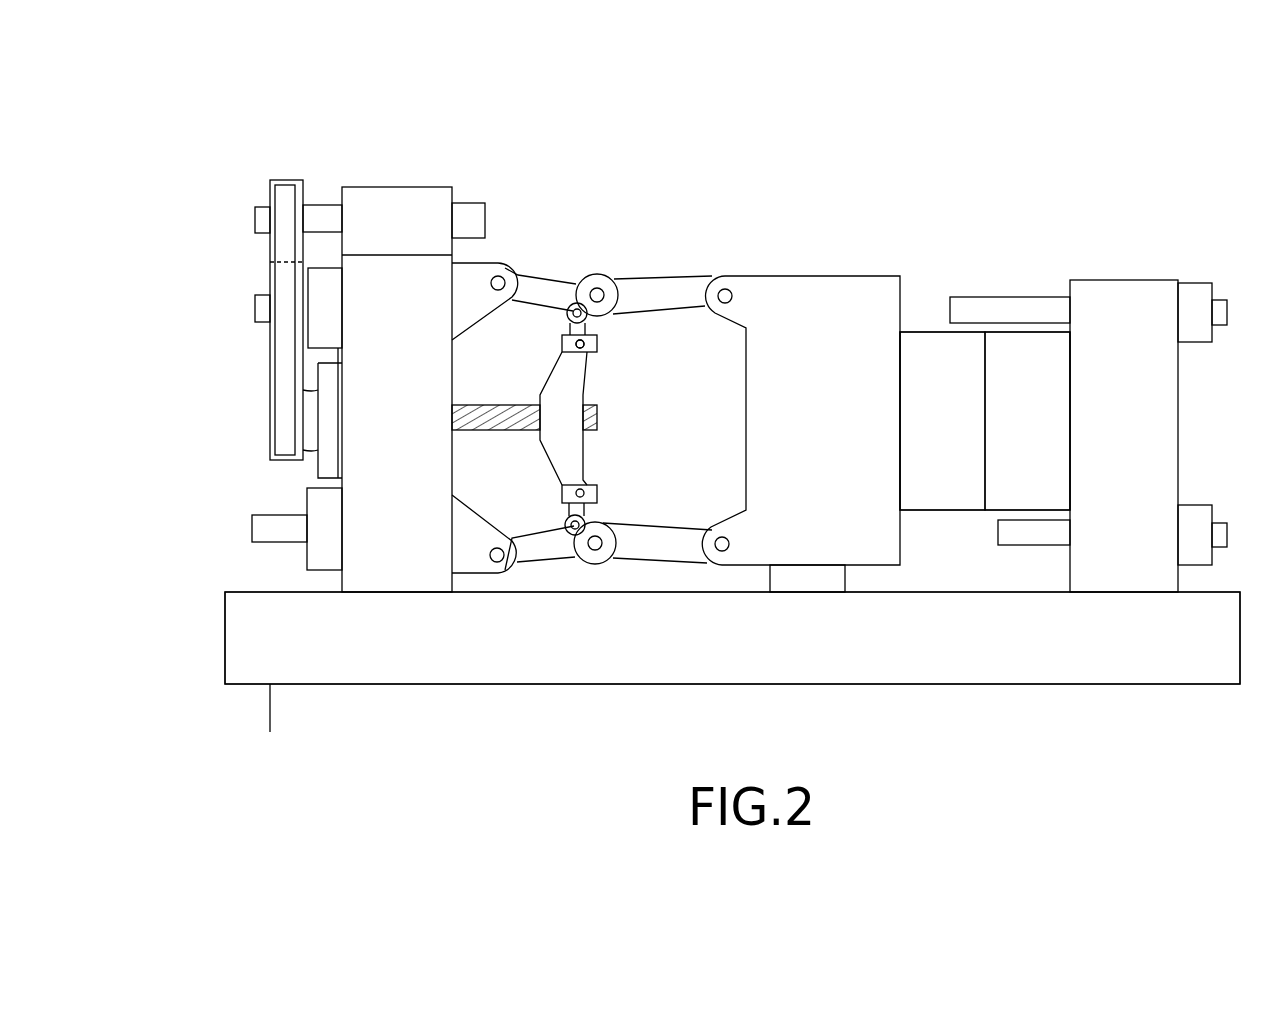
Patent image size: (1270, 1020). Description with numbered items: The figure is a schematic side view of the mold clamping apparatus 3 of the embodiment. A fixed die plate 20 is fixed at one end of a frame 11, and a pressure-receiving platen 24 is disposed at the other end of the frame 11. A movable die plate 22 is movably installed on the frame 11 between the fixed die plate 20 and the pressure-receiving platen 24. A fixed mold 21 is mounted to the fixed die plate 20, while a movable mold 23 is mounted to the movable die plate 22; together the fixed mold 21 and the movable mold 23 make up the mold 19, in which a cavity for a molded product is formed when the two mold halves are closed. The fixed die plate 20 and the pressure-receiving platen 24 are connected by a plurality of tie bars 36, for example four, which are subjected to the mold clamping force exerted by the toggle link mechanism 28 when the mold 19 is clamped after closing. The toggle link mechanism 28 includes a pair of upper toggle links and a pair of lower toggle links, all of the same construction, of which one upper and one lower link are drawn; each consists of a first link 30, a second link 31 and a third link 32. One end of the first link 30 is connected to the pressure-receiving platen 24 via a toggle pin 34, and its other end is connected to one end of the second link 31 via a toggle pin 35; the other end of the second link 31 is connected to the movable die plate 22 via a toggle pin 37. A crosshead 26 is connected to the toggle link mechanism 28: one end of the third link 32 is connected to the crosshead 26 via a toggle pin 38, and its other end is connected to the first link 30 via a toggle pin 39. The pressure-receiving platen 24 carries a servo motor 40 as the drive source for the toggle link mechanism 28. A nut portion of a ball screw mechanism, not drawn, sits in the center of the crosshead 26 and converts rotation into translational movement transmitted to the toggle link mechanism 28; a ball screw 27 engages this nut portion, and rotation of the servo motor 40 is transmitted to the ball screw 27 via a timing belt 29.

The mold clamping apparatus 3 is at (1098, 123).
The frame 11 is at (240, 638).
The mold 19 is at (1067, 241).
The fixed die plate 20 is at (1142, 292).
The fixed mold 21 is at (1044, 330).
The movable die plate 22 is at (832, 276).
The movable mold 23 is at (995, 330).
The pressure-receiving platen 24 is at (338, 480).
The crosshead 26 is at (572, 378).
The ball screw 27 is at (495, 432).
The toggle link mechanism 28 is at (643, 252).
The timing belt 29 is at (290, 352).
The first link 30 is at (540, 278).
The second link 31 is at (682, 278).
The third link 32 is at (597, 335).
The toggle pin 34 is at (498, 291).
The toggle pin 35 is at (598, 276).
The tie bar 36 is at (970, 297).
The toggle pin 37 is at (725, 303).
The toggle pin 38 is at (575, 346).
The toggle pin 39 is at (582, 278).
The servo motor 40 is at (398, 200).